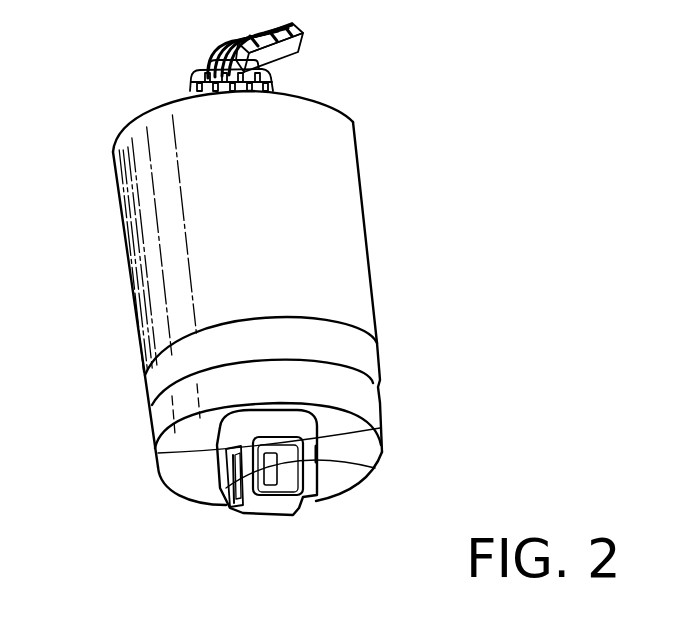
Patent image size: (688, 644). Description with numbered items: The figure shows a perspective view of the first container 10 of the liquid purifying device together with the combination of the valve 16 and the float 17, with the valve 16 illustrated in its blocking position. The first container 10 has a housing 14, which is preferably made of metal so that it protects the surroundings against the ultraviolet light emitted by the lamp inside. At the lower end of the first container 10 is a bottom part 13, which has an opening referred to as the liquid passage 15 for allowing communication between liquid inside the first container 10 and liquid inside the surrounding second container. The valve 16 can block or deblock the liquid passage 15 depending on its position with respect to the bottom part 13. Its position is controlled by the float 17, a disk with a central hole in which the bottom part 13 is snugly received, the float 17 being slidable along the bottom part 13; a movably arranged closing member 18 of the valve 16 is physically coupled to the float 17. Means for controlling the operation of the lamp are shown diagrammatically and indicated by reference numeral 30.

The first container 10 is at (143, 255).
The bottom part 13 is at (323, 460).
The housing 14 is at (133, 200).
The liquid passage 15 is at (286, 486).
The valve 16 is at (196, 501).
The float 17 is at (163, 428).
The closing member 18 is at (221, 479).
The means for controlling the operation of the lamp 30 is at (304, 38).